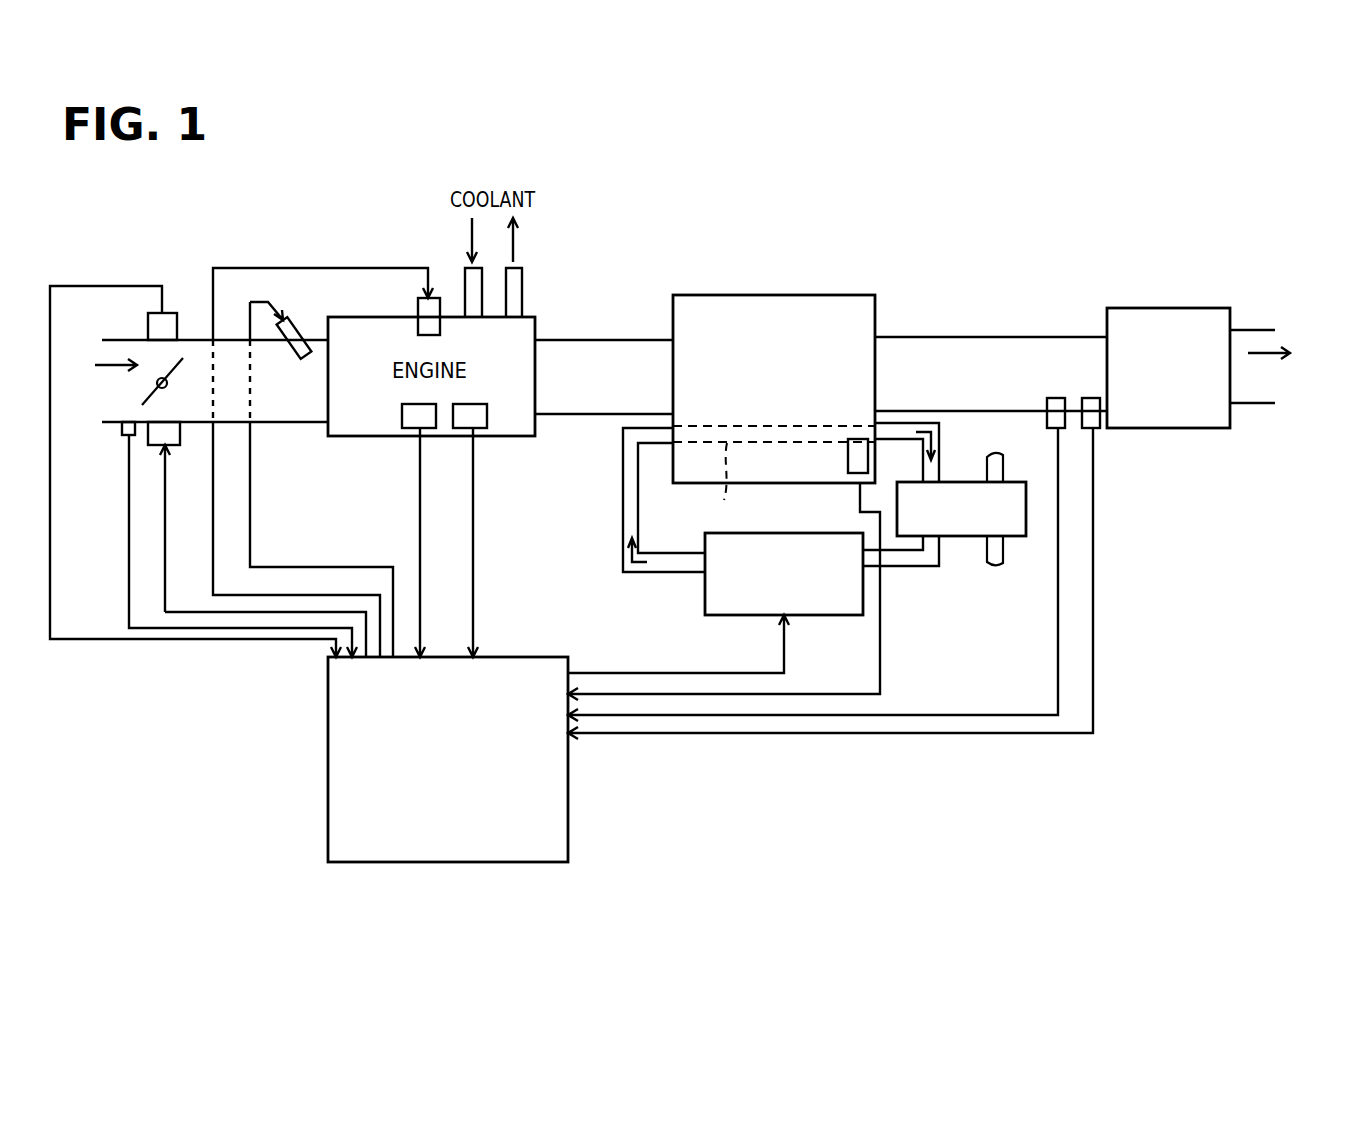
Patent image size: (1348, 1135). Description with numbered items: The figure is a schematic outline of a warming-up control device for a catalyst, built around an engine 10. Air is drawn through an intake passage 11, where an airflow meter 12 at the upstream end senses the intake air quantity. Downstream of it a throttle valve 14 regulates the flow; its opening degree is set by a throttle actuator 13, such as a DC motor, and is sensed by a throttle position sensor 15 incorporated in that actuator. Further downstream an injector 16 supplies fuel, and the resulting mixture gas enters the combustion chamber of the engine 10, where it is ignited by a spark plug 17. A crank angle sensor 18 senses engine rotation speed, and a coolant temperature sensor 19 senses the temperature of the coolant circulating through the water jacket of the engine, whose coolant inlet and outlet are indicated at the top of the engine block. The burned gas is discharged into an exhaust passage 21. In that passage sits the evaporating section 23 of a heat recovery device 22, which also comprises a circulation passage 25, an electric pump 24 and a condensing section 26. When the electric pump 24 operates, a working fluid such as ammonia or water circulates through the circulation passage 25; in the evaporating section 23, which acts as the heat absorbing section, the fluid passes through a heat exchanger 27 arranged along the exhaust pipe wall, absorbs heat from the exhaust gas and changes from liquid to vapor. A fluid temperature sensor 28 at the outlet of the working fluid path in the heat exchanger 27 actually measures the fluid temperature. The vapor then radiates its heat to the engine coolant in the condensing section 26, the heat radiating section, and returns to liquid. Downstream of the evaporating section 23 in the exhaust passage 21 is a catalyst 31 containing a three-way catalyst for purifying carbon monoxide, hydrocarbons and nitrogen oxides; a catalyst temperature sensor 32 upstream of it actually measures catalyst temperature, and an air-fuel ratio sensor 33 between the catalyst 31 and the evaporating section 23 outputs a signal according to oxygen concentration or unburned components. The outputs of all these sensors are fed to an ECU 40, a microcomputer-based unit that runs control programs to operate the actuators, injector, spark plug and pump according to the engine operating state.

The engine 10 is at (573, 280).
The intake passage 11 is at (291, 410).
The airflow meter 12 is at (122, 437).
The throttle actuator 13 is at (172, 447).
The throttle valve 14 is at (183, 358).
The throttle position sensor 15 is at (168, 310).
The injector 16 is at (297, 325).
The spark plug 17 is at (417, 308).
The crank angle sensor 18 is at (410, 430).
The coolant temperature sensor 19 is at (477, 430).
The exhaust passage 21 is at (573, 406).
The heat recovery device 22 is at (627, 589).
The evaporating section 23 is at (840, 295).
The electric pump 24 is at (837, 617).
The circulation passage 25 is at (625, 509).
The condensing section 26 is at (1027, 508).
The heat exchanger 27 is at (725, 486).
The fluid temperature sensor 28 is at (847, 460).
The catalyst 31 is at (1207, 308).
The catalyst temperature sensor 32 is at (1093, 430).
The air-fuel ratio sensor 33 is at (1052, 430).
The ECU 40 is at (521, 862).